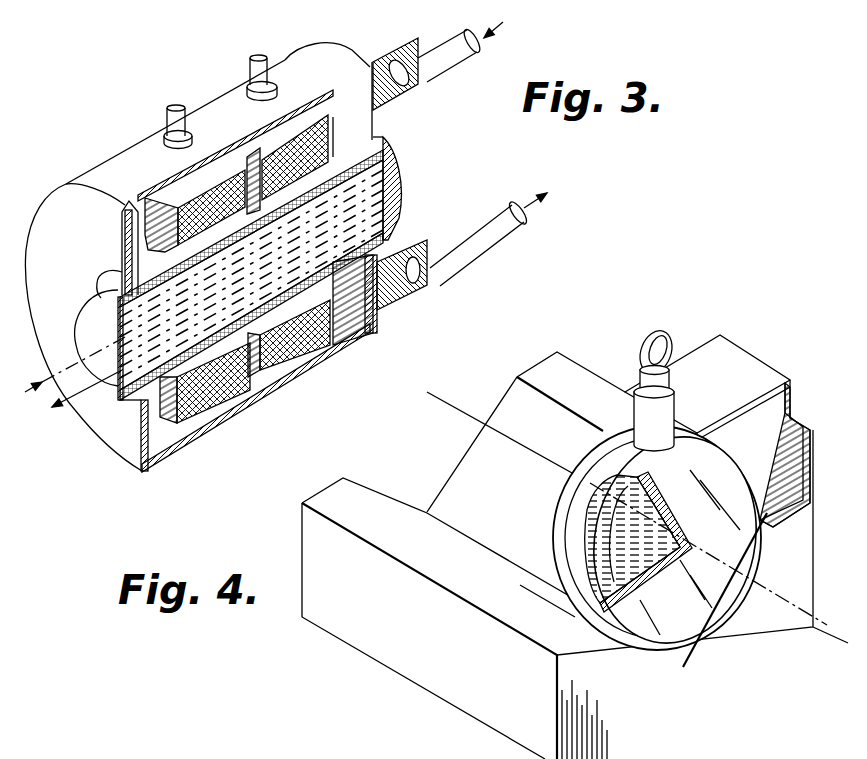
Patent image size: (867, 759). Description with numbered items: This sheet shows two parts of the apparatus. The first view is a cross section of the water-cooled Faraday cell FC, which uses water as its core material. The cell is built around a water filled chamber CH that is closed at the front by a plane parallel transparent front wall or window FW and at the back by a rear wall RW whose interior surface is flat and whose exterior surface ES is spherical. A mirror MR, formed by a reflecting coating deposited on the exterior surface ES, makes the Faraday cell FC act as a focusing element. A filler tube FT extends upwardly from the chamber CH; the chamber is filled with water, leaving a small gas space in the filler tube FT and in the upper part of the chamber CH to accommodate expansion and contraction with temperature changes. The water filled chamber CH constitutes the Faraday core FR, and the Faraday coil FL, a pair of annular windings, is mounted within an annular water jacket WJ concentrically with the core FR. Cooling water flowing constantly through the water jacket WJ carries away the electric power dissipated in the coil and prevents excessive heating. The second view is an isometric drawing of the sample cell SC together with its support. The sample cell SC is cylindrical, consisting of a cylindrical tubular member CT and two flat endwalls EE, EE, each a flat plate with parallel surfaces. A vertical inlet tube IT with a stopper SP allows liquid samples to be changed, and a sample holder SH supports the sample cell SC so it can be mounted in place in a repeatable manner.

In FIG. 3, the Faraday cell FC is at (305, 42).
In FIG. 3, the annular water jacket WJ is at (339, 86).
In FIG. 3, the Faraday coil FL is at (275, 152).
In FIG. 3, the spherical exterior surface ES is at (392, 160).
In FIG. 3, the mirror MR is at (384, 187).
In FIG. 3, the rear wall RW is at (397, 213).
In FIG. 3, the filler tube FT is at (121, 248).
In FIG. 3, the Faraday core FR is at (121, 285).
In FIG. 3, the front wall or window FW is at (110, 384).
In FIG. 3, the water filled chamber CH is at (135, 372).
In FIG. 4, the stopper SP is at (667, 348).
In FIG. 4, the vertical inlet tube IT is at (730, 377).
In FIG. 4, the sample cell SC is at (563, 502).
In FIG. 4, the endwalls EE is at (560, 543).
In FIG. 4, the sample holder SH is at (800, 548).
In FIG. 4, the cylindrical tubular member CT is at (607, 607).